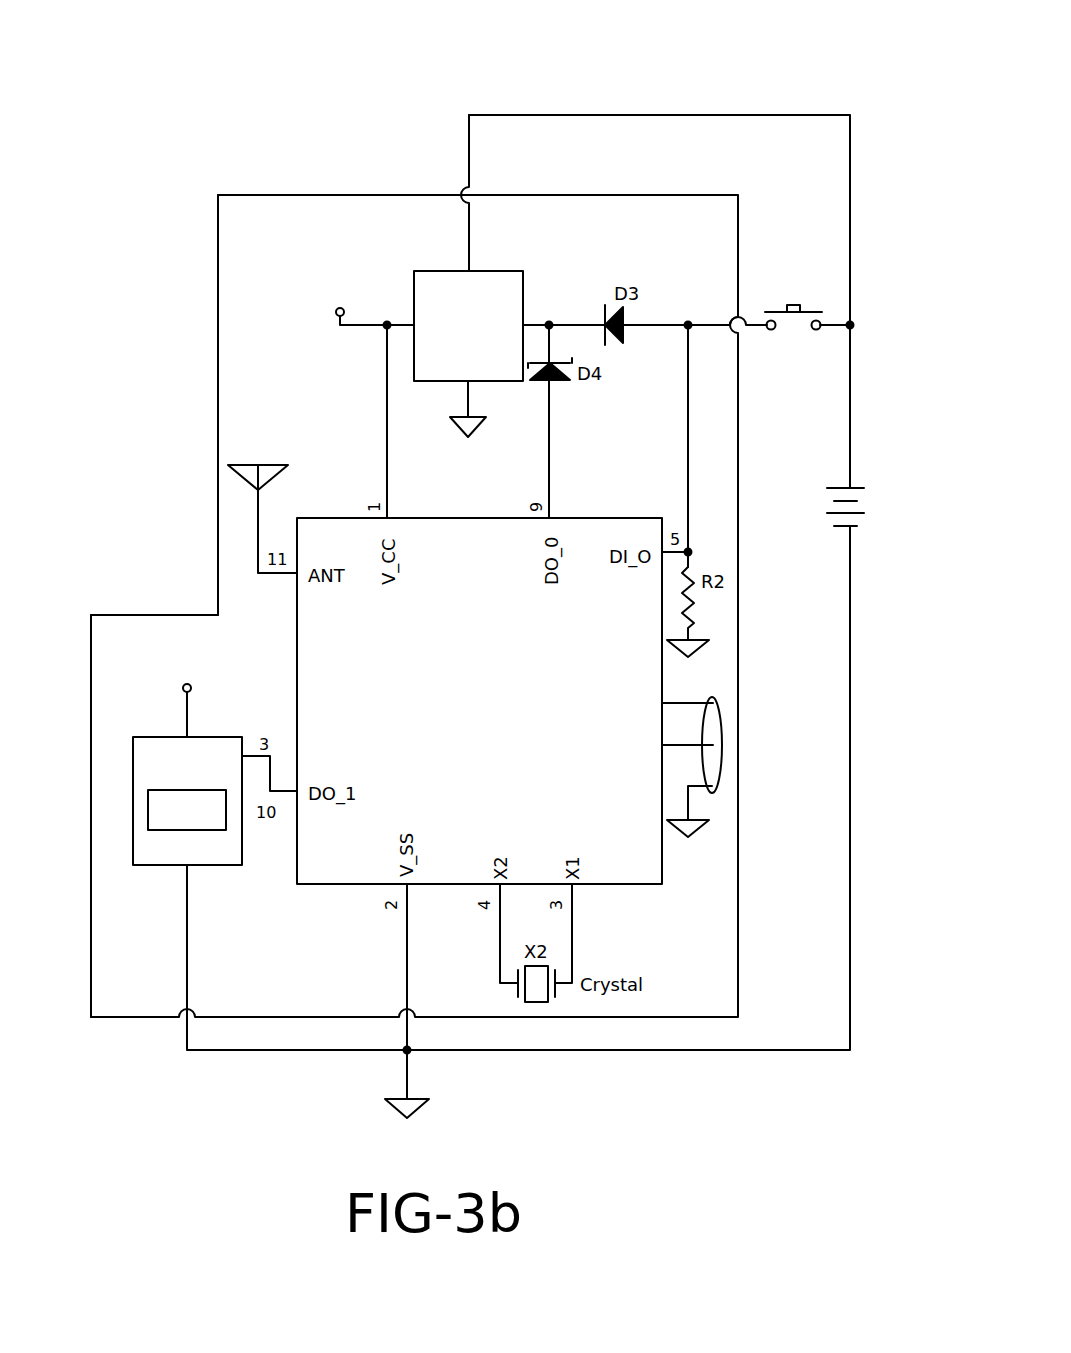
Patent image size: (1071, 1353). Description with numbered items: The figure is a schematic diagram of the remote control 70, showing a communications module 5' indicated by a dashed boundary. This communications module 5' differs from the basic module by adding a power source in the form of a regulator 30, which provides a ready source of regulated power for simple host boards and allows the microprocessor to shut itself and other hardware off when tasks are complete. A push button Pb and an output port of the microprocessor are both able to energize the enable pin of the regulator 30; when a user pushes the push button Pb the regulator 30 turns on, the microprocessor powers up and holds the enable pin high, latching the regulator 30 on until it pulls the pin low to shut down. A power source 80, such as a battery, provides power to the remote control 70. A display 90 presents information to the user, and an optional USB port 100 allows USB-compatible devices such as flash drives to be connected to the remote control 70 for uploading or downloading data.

The remote control 70 is at (120, 162).
The communications module 5' is at (414, 531).
The regulator 30 is at (440, 283).
The push button Pb is at (790, 305).
The power source 80 is at (855, 513).
The display 90 is at (150, 768).
The USB port 100 is at (722, 722).